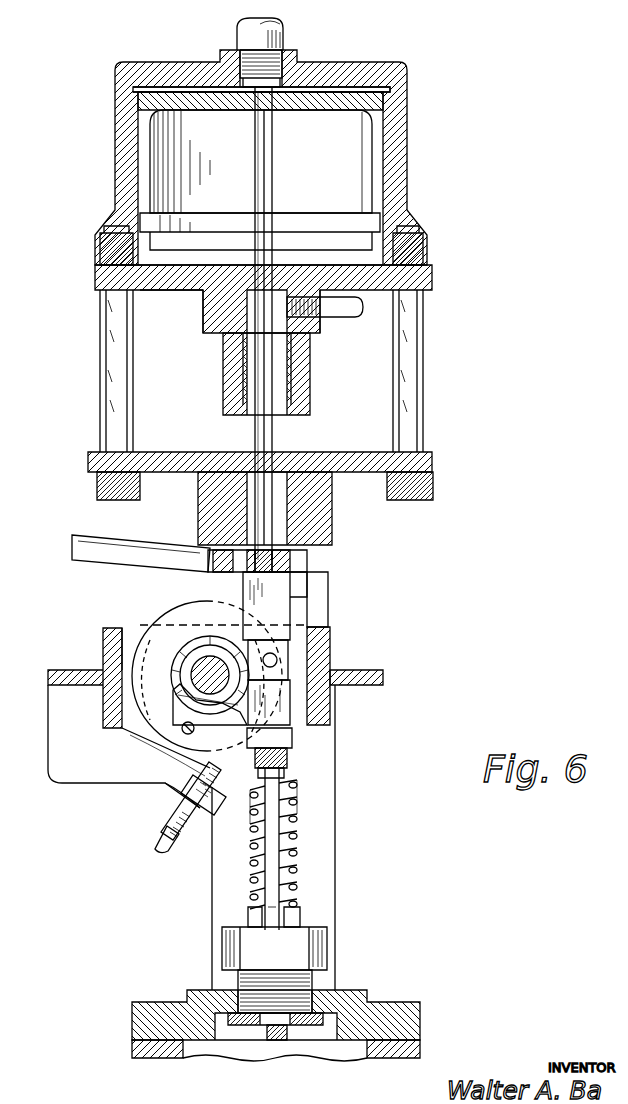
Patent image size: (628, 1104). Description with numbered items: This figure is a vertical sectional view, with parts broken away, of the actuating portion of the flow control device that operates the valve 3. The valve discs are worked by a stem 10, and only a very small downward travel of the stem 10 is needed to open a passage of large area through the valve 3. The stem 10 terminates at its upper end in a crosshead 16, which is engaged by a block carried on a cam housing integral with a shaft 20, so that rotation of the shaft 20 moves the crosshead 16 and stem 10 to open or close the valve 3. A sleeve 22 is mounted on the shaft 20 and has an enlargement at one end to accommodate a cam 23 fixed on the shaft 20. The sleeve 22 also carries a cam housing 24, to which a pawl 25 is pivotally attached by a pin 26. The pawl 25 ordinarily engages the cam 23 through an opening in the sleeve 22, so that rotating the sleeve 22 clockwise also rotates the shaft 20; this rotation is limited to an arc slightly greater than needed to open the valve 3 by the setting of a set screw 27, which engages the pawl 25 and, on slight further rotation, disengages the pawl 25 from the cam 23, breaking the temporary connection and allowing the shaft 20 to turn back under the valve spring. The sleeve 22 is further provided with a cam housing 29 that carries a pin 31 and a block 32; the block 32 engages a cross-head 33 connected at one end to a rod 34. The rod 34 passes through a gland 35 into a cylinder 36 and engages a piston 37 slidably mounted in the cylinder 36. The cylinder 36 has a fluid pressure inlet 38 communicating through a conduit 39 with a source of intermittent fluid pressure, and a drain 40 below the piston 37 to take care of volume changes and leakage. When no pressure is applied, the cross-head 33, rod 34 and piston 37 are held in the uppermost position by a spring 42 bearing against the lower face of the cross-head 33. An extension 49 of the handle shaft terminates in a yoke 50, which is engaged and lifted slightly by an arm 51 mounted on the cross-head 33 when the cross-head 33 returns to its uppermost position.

The valve 3 is at (383, 1003).
The stem 10 is at (279, 825).
The crosshead 16 is at (283, 740).
The shaft 20 is at (212, 660).
The sleeve 22 is at (185, 690).
The cam 23 is at (130, 690).
The cam housing 24 is at (183, 713).
The pawl 25 is at (182, 728).
The pin 26 is at (167, 740).
The set screw 27 is at (163, 817).
The cam housing 29 is at (235, 612).
The pin 31 is at (277, 660).
The block 32 is at (288, 640).
The cross-head 33 is at (283, 613).
The rod 34 is at (263, 173).
The gland 35 is at (307, 373).
The cylinder 36 is at (403, 152).
The piston 37 is at (384, 110).
The fluid pressure inlet 38 is at (290, 62).
The conduit 39 is at (285, 33).
The drain 40 is at (347, 317).
The spring 42 is at (285, 842).
The extension 49 is at (147, 553).
The yoke 50 is at (303, 563).
The arm 51 is at (297, 587).